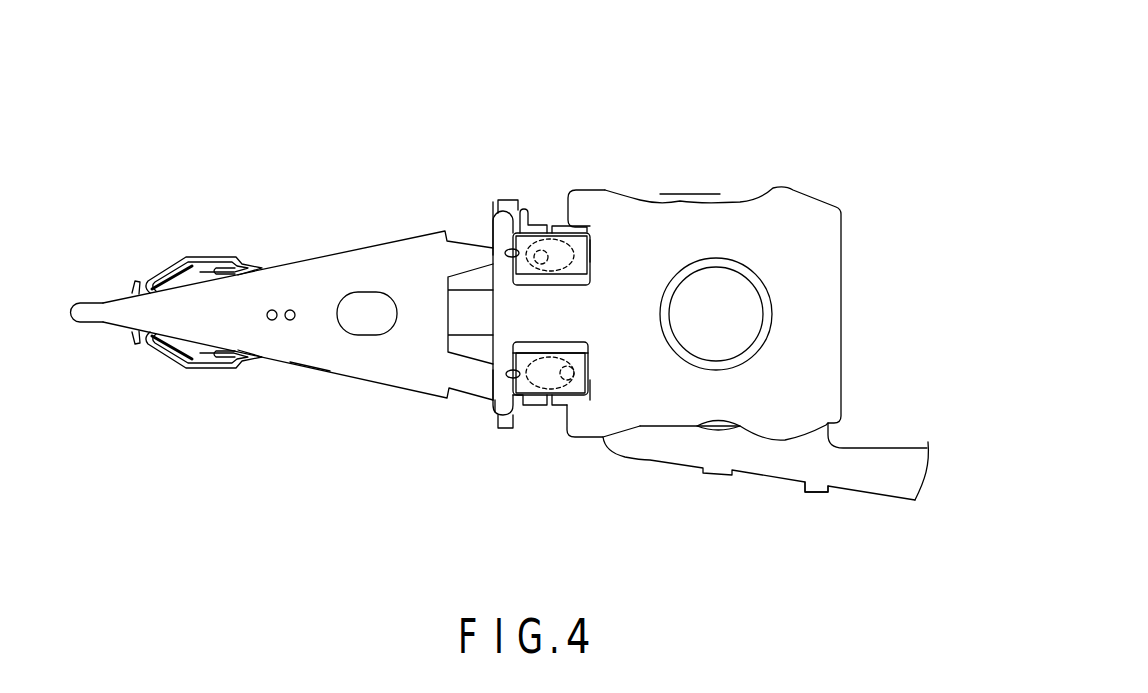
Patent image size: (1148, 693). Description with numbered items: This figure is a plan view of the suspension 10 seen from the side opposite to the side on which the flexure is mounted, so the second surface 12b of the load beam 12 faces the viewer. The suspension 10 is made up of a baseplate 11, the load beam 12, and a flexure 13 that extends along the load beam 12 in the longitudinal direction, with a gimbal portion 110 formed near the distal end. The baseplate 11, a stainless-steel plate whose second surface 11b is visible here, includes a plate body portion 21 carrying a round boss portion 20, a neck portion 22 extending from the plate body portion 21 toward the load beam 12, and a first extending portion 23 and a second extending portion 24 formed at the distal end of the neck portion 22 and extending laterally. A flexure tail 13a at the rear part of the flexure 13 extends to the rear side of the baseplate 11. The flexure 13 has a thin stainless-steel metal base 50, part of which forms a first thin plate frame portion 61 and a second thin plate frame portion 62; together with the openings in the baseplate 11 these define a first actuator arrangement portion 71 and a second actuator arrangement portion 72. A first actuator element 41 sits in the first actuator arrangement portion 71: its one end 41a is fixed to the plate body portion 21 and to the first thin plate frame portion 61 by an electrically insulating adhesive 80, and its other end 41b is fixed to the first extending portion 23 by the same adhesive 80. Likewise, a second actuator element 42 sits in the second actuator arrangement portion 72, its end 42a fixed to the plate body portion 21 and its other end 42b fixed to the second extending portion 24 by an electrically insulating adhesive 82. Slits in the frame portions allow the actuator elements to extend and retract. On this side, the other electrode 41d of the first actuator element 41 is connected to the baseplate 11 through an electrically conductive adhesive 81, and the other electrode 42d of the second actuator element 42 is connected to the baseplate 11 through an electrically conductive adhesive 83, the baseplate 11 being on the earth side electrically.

The suspension 10 is at (329, 155).
The gimbal portion 110 is at (170, 248).
The baseplate 11 is at (747, 220).
The second surface 11b is at (706, 397).
The load beam 12 is at (290, 282).
The second surface 12b is at (307, 345).
The flexure 13 is at (752, 490).
The flexure tail 13a is at (808, 463).
The boss portion 20 is at (752, 262).
The plate body portion 21 is at (687, 227).
The neck portion 22 is at (530, 310).
The first extending portion 23 is at (498, 202).
The second extending portion 24 is at (502, 428).
The first actuator element 41 is at (560, 245).
The one end of first actuator element 41a is at (592, 260).
The other end of first actuator element 41b is at (521, 215).
The other electrode of first actuator element 41d is at (556, 265).
The second actuator element 42 is at (540, 390).
The one end of second actuator element 42a is at (588, 363).
The other end of second actuator element 42b is at (513, 356).
The other electrode of second actuator element 42d is at (560, 388).
The metal base 50 is at (590, 277).
The first thin plate frame portion 61 is at (537, 212).
The second thin plate frame portion 62 is at (531, 420).
The first actuator arrangement portion 71 is at (550, 158).
The second actuator arrangement portion 72 is at (547, 497).
The adhesive 80 is at (493, 236).
The electrically conductive adhesive 81 is at (492, 222).
The adhesive 82 is at (497, 418).
The electrically conductive adhesive 83 is at (493, 408).